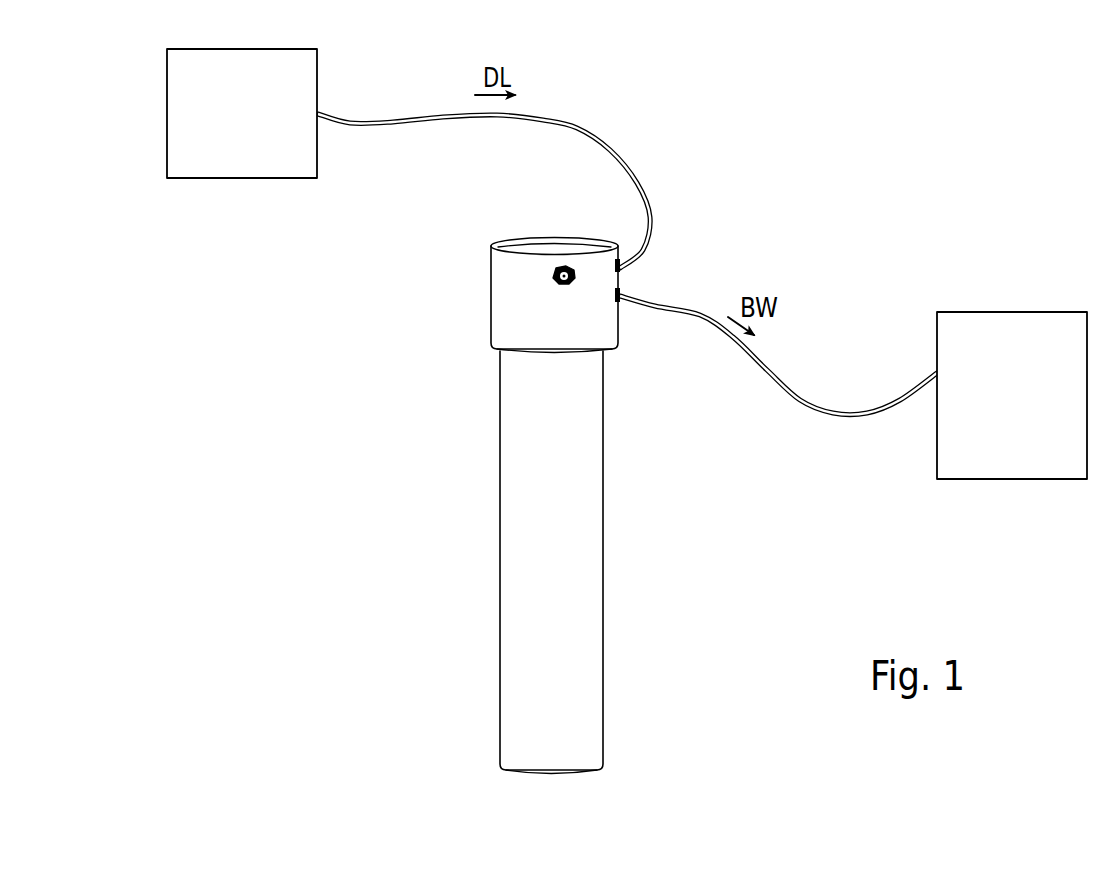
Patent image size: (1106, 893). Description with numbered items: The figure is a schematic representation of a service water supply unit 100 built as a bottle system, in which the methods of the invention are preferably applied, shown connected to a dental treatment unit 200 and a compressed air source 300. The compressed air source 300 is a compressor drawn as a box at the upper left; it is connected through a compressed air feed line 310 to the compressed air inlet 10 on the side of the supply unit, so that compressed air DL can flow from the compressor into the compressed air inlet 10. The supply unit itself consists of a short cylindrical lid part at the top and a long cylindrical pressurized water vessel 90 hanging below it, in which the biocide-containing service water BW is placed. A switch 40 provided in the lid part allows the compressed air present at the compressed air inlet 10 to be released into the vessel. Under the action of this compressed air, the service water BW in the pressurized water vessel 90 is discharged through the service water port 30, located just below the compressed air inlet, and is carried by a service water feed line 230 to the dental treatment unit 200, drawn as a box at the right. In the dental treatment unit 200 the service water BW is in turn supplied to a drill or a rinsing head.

The service water supply unit 100 is at (520, 483).
The compressed air inlet 10 is at (618, 270).
The service water port 30 is at (620, 302).
The switch 40 is at (558, 267).
The pressurized water vessel 90 is at (588, 535).
The dental treatment unit 200 is at (1017, 322).
The service water feed line 230 is at (787, 390).
The compressed air source 300 is at (242, 167).
The compressed air feed line 310 is at (572, 123).